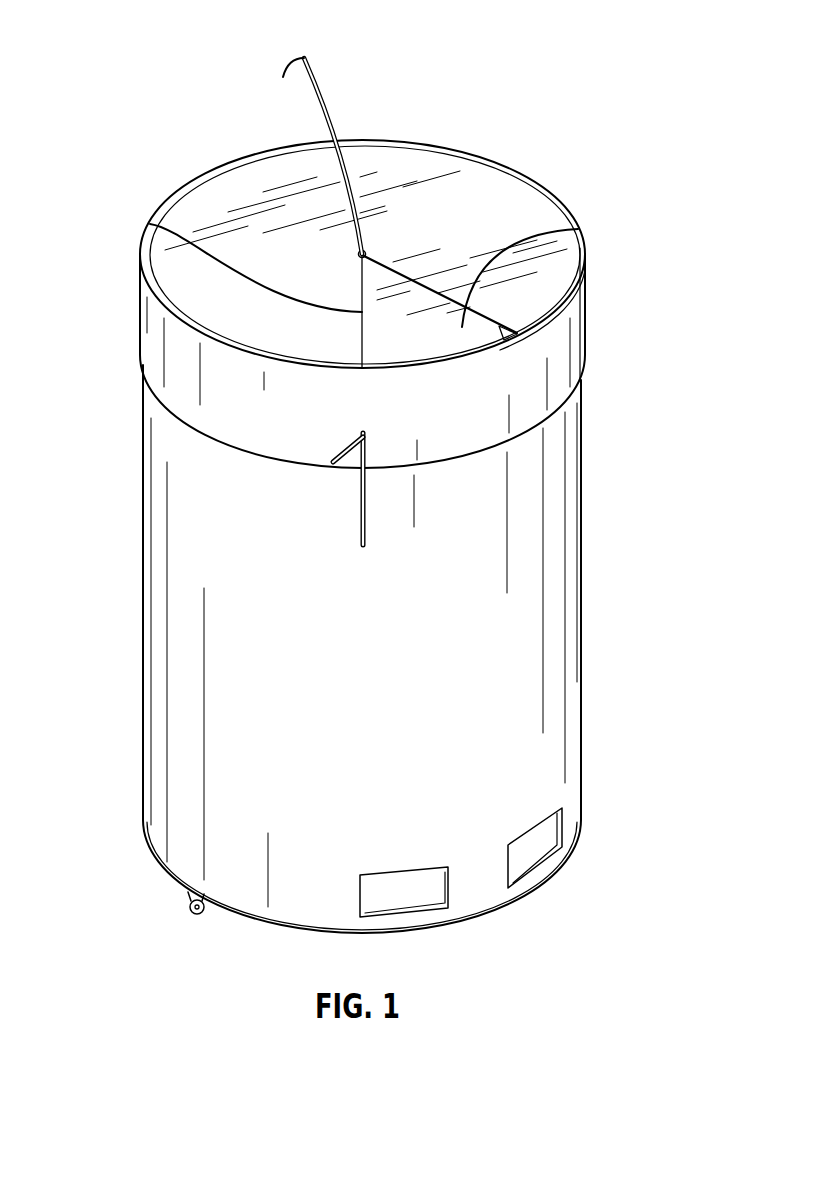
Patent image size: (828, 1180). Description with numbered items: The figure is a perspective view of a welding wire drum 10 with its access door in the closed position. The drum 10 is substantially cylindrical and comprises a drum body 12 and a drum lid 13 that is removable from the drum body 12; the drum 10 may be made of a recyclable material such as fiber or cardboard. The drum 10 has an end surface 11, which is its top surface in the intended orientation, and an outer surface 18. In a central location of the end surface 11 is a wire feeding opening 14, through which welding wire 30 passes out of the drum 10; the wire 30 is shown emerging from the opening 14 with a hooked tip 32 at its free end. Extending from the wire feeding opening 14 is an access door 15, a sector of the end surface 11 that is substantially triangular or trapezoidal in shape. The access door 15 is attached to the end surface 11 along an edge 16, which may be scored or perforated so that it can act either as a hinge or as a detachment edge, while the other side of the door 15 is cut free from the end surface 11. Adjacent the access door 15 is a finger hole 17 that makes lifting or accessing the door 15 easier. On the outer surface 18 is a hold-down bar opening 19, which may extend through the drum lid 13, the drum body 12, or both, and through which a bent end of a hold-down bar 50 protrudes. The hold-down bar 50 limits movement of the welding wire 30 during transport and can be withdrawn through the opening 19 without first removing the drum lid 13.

The drum 10 is at (618, 547).
The end surface 11 is at (495, 192).
The drum body 12 is at (535, 772).
The drum lid 13 is at (155, 347).
The wire feeding opening 14 is at (365, 251).
The access door 15 is at (578, 229).
The edge 16 is at (150, 224).
The finger hole 17 is at (550, 297).
The outer surface 18 is at (572, 695).
The hold-down bar opening 19 is at (358, 523).
The welding wire 30 is at (347, 160).
The hook 32 is at (302, 85).
The hold-down bar 50 is at (338, 443).